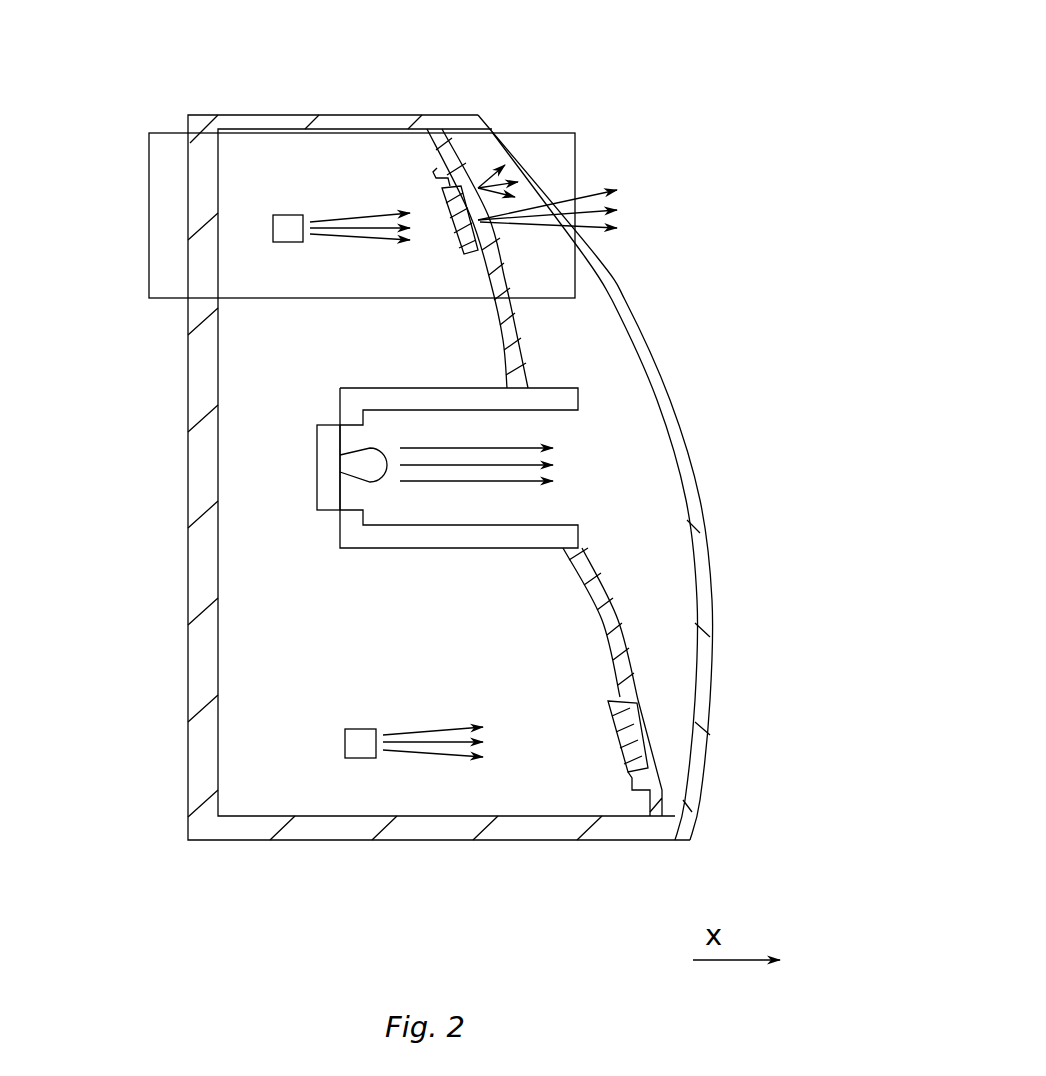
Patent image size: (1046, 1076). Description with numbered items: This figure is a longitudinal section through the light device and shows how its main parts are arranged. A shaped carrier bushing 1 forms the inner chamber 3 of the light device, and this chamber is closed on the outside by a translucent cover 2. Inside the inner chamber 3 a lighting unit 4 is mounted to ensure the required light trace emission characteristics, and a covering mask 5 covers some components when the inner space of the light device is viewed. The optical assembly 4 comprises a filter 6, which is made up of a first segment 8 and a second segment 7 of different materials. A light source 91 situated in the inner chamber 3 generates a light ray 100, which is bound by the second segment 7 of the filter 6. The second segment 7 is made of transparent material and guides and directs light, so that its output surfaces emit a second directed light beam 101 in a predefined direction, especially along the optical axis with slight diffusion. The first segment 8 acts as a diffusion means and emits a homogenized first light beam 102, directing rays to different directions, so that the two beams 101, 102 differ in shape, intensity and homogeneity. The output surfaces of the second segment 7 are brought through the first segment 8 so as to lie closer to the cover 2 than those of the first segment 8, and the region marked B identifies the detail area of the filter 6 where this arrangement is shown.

The carrier bushing 1 is at (186, 797).
The translucent cover 2 is at (710, 748).
The inner chamber 3 is at (298, 392).
The lighting unit 4 is at (317, 448).
The covering mask 5 is at (520, 318).
The filter 6 is at (437, 168).
The second segment 7 is at (624, 708).
The first segment 8 is at (650, 774).
The light source 91 is at (272, 231).
The light ray 100 is at (348, 220).
The second light beam 101 is at (618, 176).
The first light beam 102 is at (491, 158).
The region B is at (548, 133).